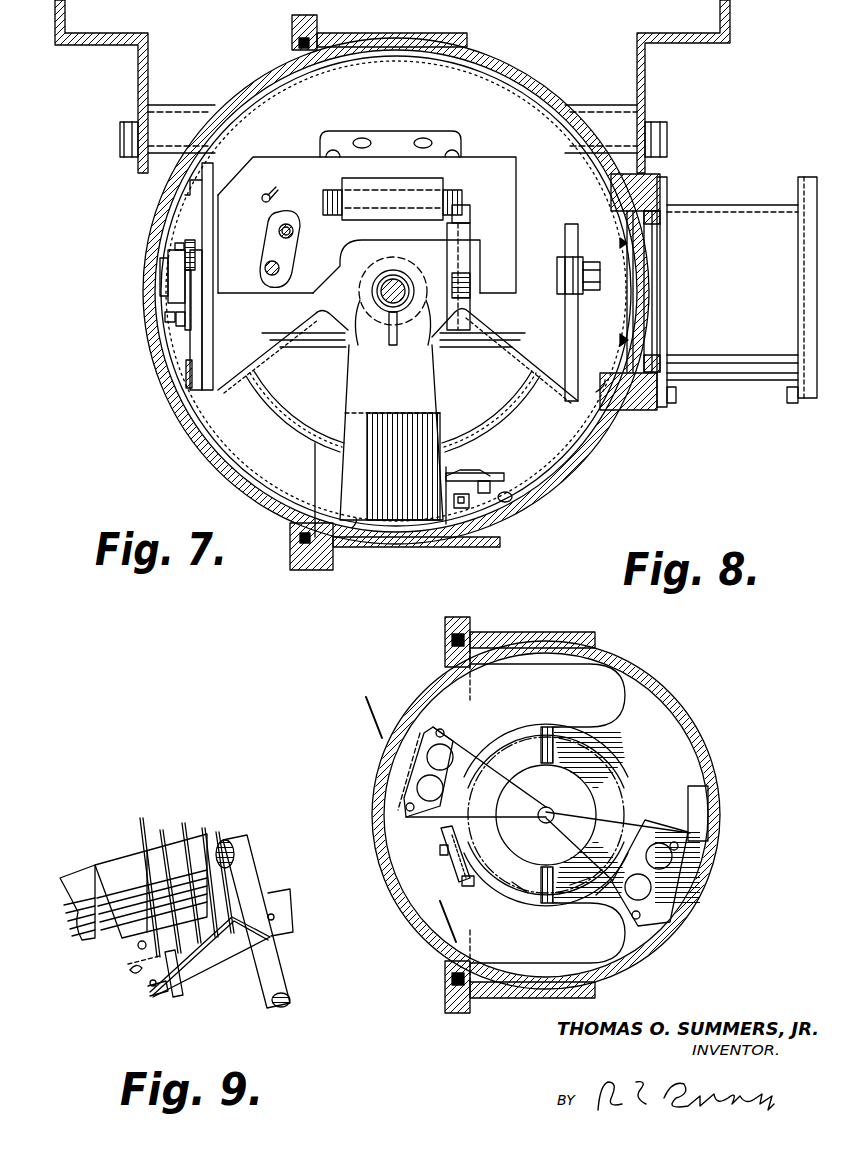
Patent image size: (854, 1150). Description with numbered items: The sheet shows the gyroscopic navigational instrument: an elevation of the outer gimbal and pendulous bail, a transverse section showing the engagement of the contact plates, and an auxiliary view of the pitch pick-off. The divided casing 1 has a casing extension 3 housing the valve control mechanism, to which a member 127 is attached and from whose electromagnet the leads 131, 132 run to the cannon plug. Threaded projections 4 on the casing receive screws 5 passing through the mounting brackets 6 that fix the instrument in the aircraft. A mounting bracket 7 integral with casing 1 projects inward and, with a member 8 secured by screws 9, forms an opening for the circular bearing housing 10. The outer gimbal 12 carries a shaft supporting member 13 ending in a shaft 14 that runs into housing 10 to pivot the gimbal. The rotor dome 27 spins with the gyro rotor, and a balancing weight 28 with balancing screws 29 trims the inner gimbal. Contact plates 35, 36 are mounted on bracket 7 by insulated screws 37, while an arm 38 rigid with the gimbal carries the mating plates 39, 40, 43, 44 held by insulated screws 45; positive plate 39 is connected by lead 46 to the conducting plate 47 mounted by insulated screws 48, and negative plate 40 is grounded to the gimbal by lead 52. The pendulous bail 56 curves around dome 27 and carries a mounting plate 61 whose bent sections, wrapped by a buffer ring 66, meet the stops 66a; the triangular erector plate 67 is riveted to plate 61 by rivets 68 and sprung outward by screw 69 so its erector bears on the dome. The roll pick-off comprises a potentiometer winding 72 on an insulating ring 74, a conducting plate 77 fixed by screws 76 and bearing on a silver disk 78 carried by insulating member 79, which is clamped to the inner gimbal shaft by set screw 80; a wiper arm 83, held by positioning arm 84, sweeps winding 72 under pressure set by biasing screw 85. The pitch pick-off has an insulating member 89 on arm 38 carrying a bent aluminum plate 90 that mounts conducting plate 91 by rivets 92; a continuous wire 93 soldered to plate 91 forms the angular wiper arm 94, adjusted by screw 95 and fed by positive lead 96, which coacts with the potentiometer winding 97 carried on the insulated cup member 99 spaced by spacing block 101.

In FIG. 7, the divided casing 1 is at (503, 58).
In FIG. 8, the divided casing 1 is at (592, 636).
In FIG. 7, the casing extension 3 is at (732, 207).
In FIG. 7, the projections 4 is at (183, 107).
In FIG. 7, the screws 5 is at (118, 136).
In FIG. 7, the mounting brackets 6 is at (140, 90).
In FIG. 8, the mounting bracket 7 is at (672, 746).
In FIG. 8, the member 8 is at (543, 734).
In FIG. 8, the screws 9 is at (526, 730).
In FIG. 8, the circular bearing housing 10 is at (583, 777).
In FIG. 7, the outer gimbal 12 is at (506, 160).
In FIG. 7, the shaft supporting member 13 is at (397, 314).
In FIG. 7, the shaft 14 is at (403, 284).
In FIG. 7, the rotor dome 27 is at (286, 410).
In FIG. 7, the balancing weight 28 is at (400, 140).
In FIG. 7, the balancing screws 29 is at (332, 151).
In FIG. 8, the contact plate 35 is at (643, 822).
In FIG. 8, the contact plate 36 is at (600, 888).
In FIG. 8, the insulated screws 37 is at (630, 880).
In FIG. 7, the arm 38 is at (268, 246).
In FIG. 9, the arm 38 is at (78, 870).
In FIG. 9, the positive contact plate 39 is at (141, 836).
In FIG. 9, the negative contact plate 40 is at (162, 832).
In FIG. 8, the contact plate 43 is at (449, 735).
In FIG. 8, the contact plate 44 is at (512, 794).
In FIG. 7, the insulated screws 45 is at (288, 226).
In FIG. 8, the insulated screws 45 is at (430, 757).
In FIG. 9, the insulated screws 45 is at (212, 842).
In FIG. 9, the lead 46 is at (184, 826).
In FIG. 7, the conducting plate 47 is at (600, 292).
In FIG. 7, the insulated screws 48 is at (600, 270).
In FIG. 7, the lead 52 is at (267, 192).
In FIG. 7, the pendulous bail 56 is at (345, 468).
In FIG. 7, the mounting plate 61 is at (508, 490).
In FIG. 7, the buffer ring 66 is at (540, 495).
In FIG. 7, the stops 66a is at (598, 396).
In FIG. 7, the triangular erector plate 67 is at (456, 474).
In FIG. 7, the rivets 68 is at (488, 478).
In FIG. 7, the screw 69 is at (462, 508).
In FIG. 7, the potentiometer winding 72 is at (190, 362).
In FIG. 7, the insulating ring 74 is at (208, 392).
In FIG. 7, the screws 76 is at (190, 182).
In FIG. 7, the conducting plate 77 is at (184, 222).
In FIG. 7, the silver disk 78 is at (165, 312).
In FIG. 7, the insulating member 79 is at (175, 276).
In FIG. 7, the set screw 80 is at (174, 248).
In FIG. 7, the wiper arm 83 is at (188, 385).
In FIG. 7, the positioning arm 84 is at (185, 340).
In FIG. 7, the biasing screw 85 is at (175, 322).
In FIG. 8, the insulating member 89 is at (420, 790).
In FIG. 9, the insulating member 89 is at (110, 862).
In FIG. 8, the bent aluminum plate 90 is at (467, 886).
In FIG. 9, the bent aluminum plate 90 is at (150, 990).
In FIG. 8, the conducting plate 91 is at (460, 873).
In FIG. 9, the conducting plate 91 is at (130, 967).
In FIG. 8, the rivets 92 is at (460, 885).
In FIG. 9, the rivets 92 is at (138, 946).
In FIG. 8, the continuous wire 93 is at (470, 862).
In FIG. 9, the continuous wire 93 is at (196, 970).
In FIG. 9, the angular wiper arm 94 is at (275, 917).
In FIG. 8, the screw 95 is at (440, 850).
In FIG. 9, the screw 95 is at (176, 993).
In FIG. 9, the positive lead 96 is at (136, 971).
In FIG. 8, the potentiometer winding 97 is at (512, 895).
In FIG. 9, the potentiometer winding 97 is at (273, 1006).
In FIG. 9, the insulated cup member 99 is at (250, 852).
In FIG. 9, the spacing block 101 is at (284, 900).
In FIG. 7, the member 127 is at (808, 180).
In FIG. 7, the lead 131 is at (618, 242).
In FIG. 7, the lead 132 is at (630, 342).